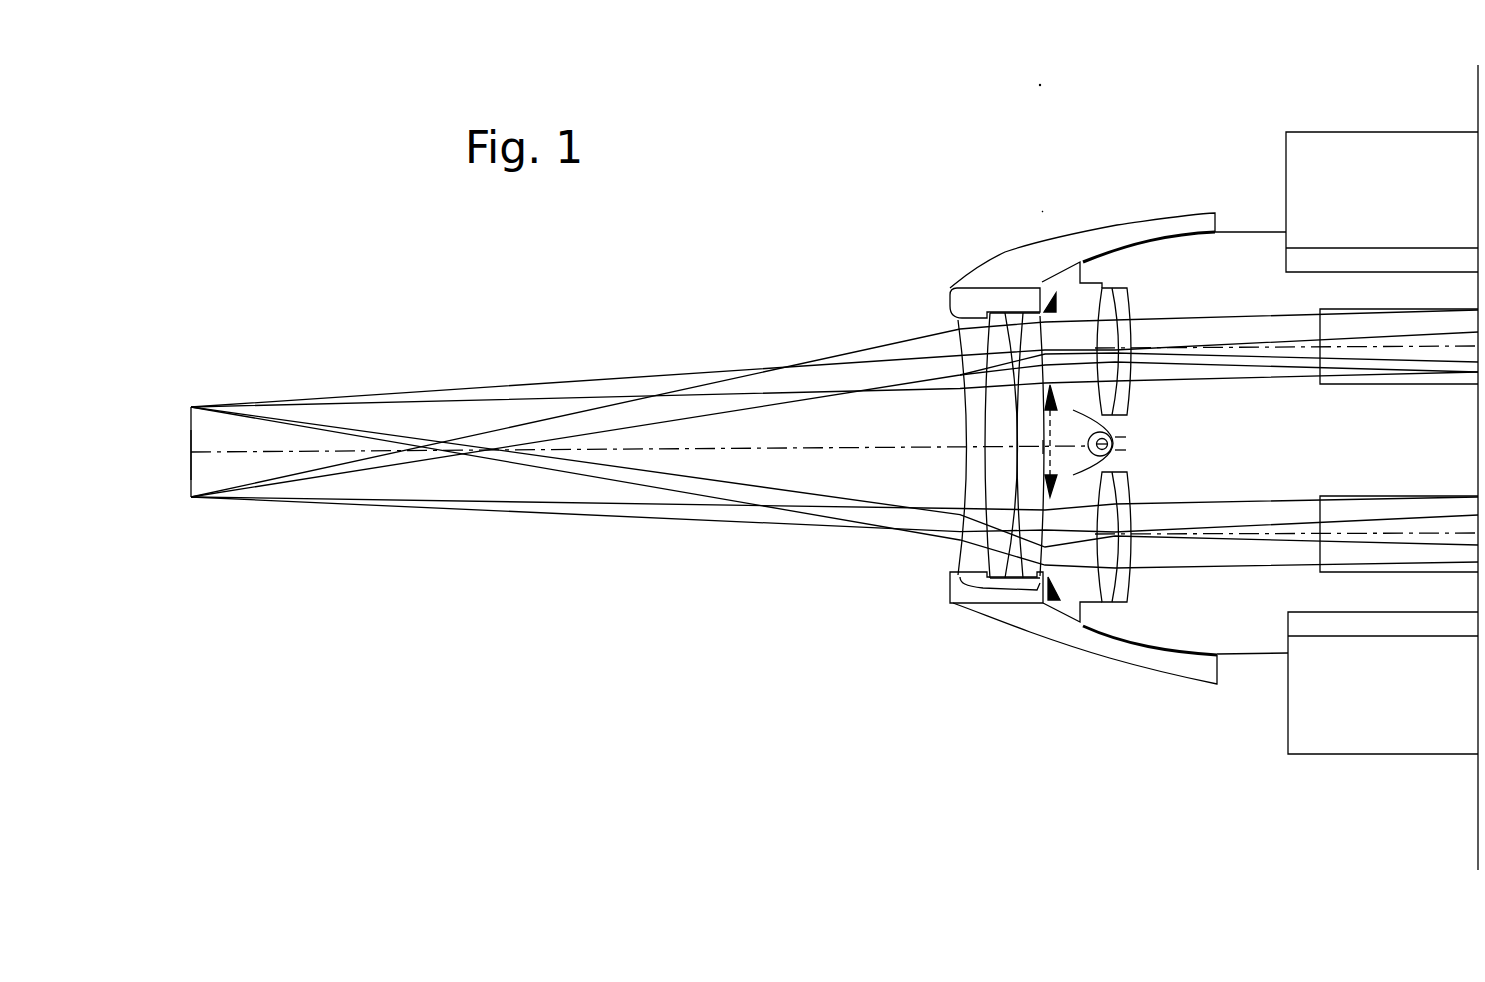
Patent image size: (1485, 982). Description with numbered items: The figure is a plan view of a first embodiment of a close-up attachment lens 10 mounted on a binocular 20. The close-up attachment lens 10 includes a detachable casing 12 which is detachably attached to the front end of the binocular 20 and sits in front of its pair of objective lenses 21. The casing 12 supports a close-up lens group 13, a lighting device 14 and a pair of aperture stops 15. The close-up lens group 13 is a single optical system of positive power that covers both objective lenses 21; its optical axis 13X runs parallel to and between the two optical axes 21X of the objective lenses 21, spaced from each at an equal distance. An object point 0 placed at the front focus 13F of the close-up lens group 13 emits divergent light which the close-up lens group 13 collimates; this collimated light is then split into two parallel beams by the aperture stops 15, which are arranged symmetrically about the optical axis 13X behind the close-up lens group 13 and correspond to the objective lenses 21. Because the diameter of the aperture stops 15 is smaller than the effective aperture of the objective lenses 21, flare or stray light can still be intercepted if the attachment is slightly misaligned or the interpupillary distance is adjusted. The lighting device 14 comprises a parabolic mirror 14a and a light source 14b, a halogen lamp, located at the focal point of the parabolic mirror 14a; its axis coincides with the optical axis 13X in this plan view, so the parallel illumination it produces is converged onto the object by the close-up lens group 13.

The object 0 is at (192, 427).
The close-up attachment lens 10 is at (1038, 206).
The detachable casing 12 is at (1083, 648).
The close-up lens group 13 is at (1007, 587).
The focal plane of objective lens 13F is at (192, 478).
The optical axis of the close-up lens group 13X is at (655, 448).
The lighting device 14 is at (1125, 438).
The parabolic mirror 14a is at (1100, 427).
The light source 14b is at (1043, 447).
The aperture stops 15 is at (1058, 300).
The binocular 20 is at (1244, 226).
The objective lenses 21 is at (1130, 302).
The optical axes of the objective lenses 21X is at (1349, 357).